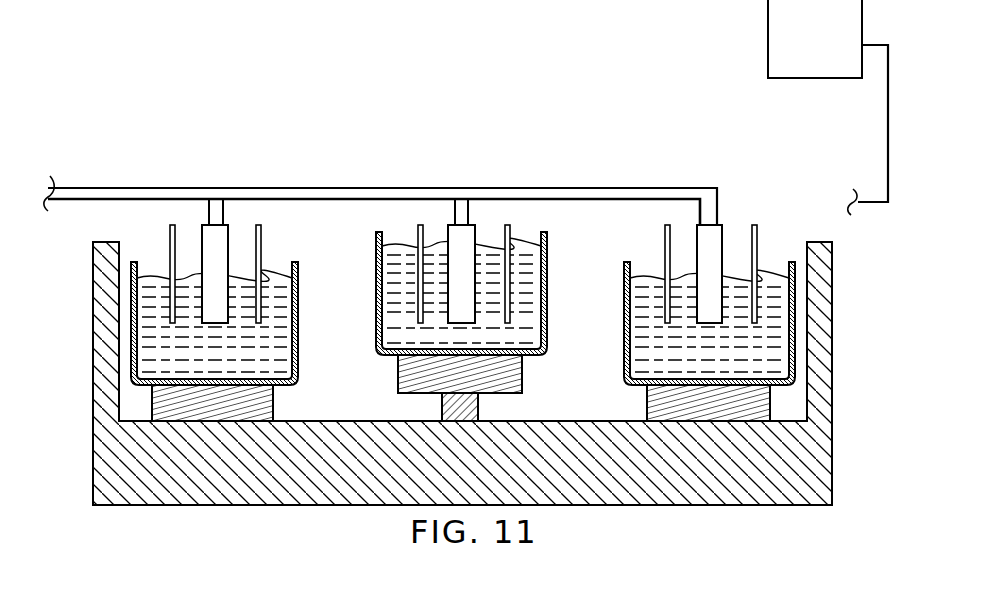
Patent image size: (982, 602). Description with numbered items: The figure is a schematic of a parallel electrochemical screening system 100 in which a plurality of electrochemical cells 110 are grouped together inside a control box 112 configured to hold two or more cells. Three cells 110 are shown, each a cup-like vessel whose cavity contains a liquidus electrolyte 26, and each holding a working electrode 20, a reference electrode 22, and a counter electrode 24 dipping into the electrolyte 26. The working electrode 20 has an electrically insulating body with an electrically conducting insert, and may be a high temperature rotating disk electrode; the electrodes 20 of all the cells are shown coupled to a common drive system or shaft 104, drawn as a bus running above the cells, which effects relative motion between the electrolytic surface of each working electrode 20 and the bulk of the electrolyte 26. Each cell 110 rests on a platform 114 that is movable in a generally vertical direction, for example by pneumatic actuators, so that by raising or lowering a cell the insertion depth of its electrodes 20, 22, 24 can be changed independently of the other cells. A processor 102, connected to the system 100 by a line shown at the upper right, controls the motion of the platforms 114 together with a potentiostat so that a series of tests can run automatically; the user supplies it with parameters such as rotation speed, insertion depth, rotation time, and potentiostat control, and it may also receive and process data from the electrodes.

The working electrode 20 is at (207, 232).
The reference electrode 22 is at (172, 225).
The counter electrode 24 is at (262, 225).
The liquidus electrolyte 26 is at (780, 352).
The parallel electrochemical screening system 100 is at (808, 242).
The processor 102 is at (836, 32).
The drive system or shaft 104 is at (87, 187).
The electrochemical cell 110 is at (377, 288).
The control box 112 is at (100, 350).
The platform 114 is at (270, 407).